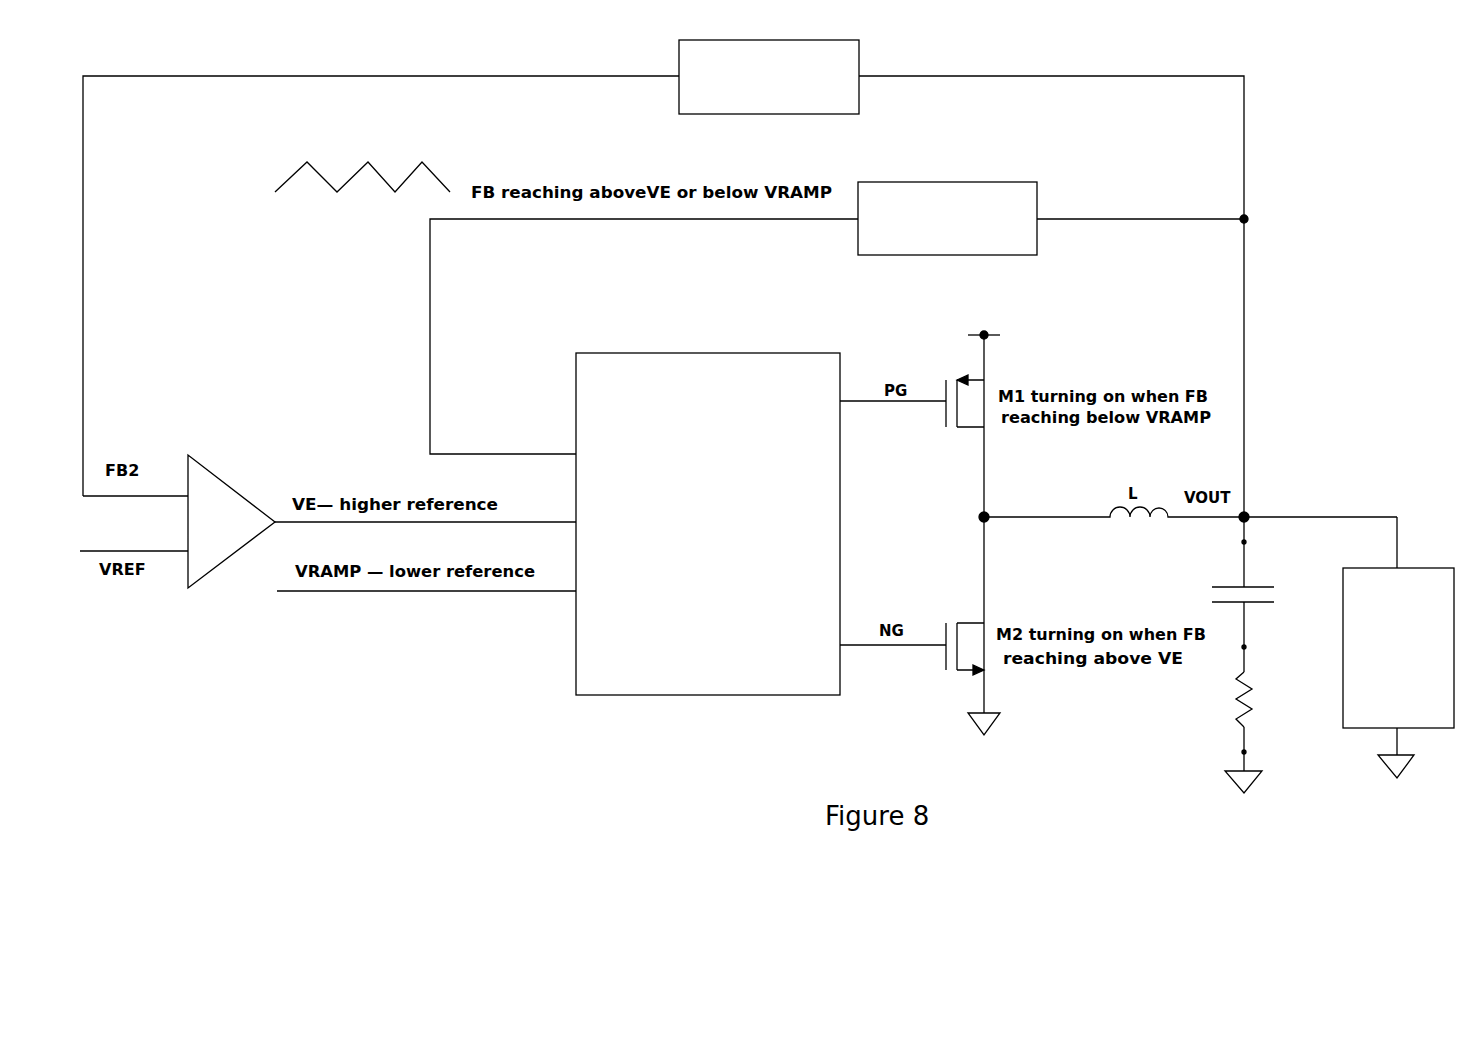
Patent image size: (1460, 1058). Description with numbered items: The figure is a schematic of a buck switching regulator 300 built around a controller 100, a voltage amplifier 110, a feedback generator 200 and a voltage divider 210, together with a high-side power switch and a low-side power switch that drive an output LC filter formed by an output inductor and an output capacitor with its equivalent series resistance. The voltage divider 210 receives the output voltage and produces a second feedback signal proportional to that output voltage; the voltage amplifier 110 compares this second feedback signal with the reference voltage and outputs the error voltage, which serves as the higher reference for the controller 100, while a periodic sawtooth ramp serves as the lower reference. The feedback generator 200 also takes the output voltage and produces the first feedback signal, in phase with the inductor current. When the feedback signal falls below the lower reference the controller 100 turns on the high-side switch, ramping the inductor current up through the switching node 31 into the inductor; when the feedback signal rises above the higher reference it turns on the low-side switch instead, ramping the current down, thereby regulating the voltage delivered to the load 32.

The voltage divider 210 is at (857, 62).
The feedback generator 200 is at (1036, 203).
The voltage amplifier 110 is at (205, 462).
The controller 100 is at (708, 524).
The switching regulator 300 is at (1288, 433).
The switching node SW 31 is at (1040, 521).
The load 32 is at (1370, 515).